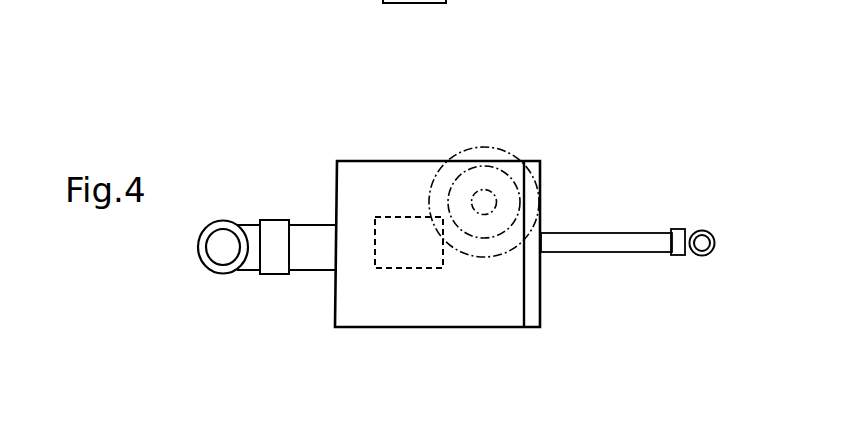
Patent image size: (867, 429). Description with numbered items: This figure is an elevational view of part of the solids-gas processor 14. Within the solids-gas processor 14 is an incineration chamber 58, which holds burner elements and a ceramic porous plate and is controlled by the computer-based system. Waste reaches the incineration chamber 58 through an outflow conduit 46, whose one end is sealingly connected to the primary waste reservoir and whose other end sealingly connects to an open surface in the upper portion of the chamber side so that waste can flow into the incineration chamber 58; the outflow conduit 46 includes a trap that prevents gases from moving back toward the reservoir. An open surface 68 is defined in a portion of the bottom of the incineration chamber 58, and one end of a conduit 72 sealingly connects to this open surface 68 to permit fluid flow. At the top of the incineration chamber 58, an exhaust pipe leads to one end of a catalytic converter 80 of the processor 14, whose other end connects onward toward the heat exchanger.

The solids-gas processor 14 is at (332, 107).
The incineration chamber 58 is at (337, 183).
The catalytic converter 80 is at (433, 182).
The outflow conduit 46 is at (203, 262).
The open surface 68 is at (548, 233).
The conduit 72 is at (682, 228).